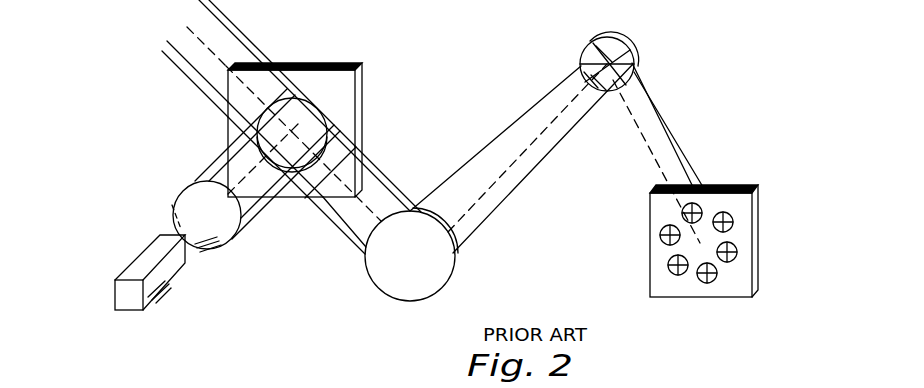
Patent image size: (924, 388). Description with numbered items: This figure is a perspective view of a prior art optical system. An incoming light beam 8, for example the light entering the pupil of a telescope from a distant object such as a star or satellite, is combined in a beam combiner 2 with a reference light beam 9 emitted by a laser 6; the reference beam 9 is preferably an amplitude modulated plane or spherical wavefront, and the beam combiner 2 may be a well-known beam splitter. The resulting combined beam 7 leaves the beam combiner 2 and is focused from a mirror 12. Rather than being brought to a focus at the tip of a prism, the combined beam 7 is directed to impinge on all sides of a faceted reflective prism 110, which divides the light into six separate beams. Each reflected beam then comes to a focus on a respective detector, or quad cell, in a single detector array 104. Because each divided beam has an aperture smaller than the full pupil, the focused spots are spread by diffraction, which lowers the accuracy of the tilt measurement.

The light beam 8 is at (206, 94).
The reference light beam 9 is at (207, 168).
The laser 6 is at (155, 291).
The beam combiner 2 is at (361, 110).
The combined beam 7 is at (388, 192).
The mirror 12 is at (366, 267).
The reflective prism 110 is at (590, 42).
The array 104 is at (650, 245).